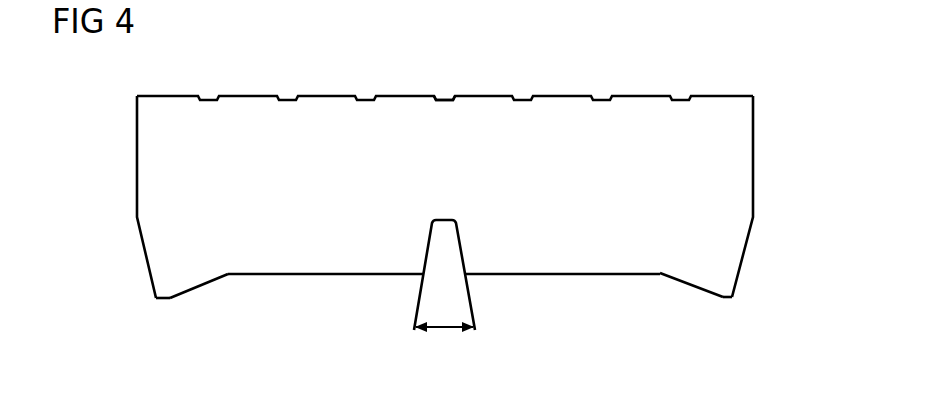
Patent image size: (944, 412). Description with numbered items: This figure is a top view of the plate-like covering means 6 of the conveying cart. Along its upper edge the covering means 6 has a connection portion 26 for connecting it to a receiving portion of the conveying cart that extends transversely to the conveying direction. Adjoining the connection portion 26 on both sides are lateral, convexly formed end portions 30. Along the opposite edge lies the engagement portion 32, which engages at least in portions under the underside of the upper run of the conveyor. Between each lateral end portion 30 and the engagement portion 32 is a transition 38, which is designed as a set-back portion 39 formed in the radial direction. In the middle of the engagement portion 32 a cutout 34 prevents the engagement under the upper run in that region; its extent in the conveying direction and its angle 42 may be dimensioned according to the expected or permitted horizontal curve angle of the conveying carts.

The covering means 6 is at (265, 74).
The connection portion 26 is at (496, 76).
The lateral convexly formed end portions 30 is at (122, 189).
The transition 38 is at (157, 316).
The set-back portion 39 is at (200, 289).
The engagement portion 32 is at (405, 293).
The cutout 34 is at (491, 297).
The angle of the cutout 42 is at (443, 325).